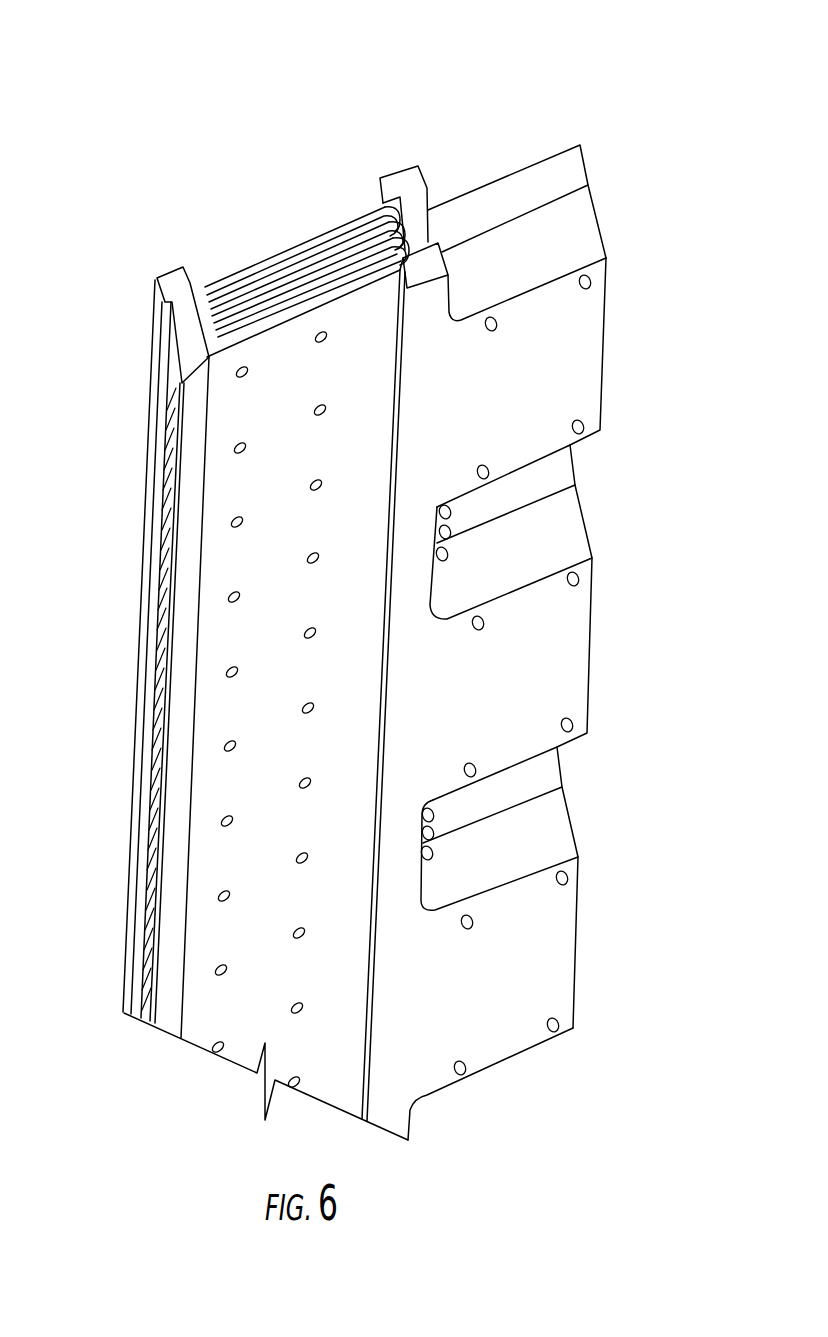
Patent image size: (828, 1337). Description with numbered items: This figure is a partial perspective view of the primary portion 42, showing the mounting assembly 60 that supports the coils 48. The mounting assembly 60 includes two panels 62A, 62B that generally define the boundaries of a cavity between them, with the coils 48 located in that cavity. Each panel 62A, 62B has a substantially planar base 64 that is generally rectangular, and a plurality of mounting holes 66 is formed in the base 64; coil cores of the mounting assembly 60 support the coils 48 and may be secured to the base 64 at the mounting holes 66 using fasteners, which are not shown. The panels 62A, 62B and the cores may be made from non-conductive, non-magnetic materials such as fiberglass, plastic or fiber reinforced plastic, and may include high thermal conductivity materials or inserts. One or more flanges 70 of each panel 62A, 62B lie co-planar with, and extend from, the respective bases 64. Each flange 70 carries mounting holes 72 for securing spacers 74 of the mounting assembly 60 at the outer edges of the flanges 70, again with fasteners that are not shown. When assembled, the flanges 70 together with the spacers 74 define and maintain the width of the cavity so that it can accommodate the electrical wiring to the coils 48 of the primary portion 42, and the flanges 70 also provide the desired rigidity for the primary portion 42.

The primary portion 42 is at (172, 62).
The coils 48 is at (343, 250).
The mounting assembly 60 is at (230, 250).
The panel 62A is at (393, 1150).
The panel 62B is at (355, 203).
The base 64 is at (285, 357).
The mounting holes 66 is at (301, 1012).
The flanges 70 is at (168, 278).
The mounting holes 72 is at (470, 1077).
The spacers 74 is at (587, 218).